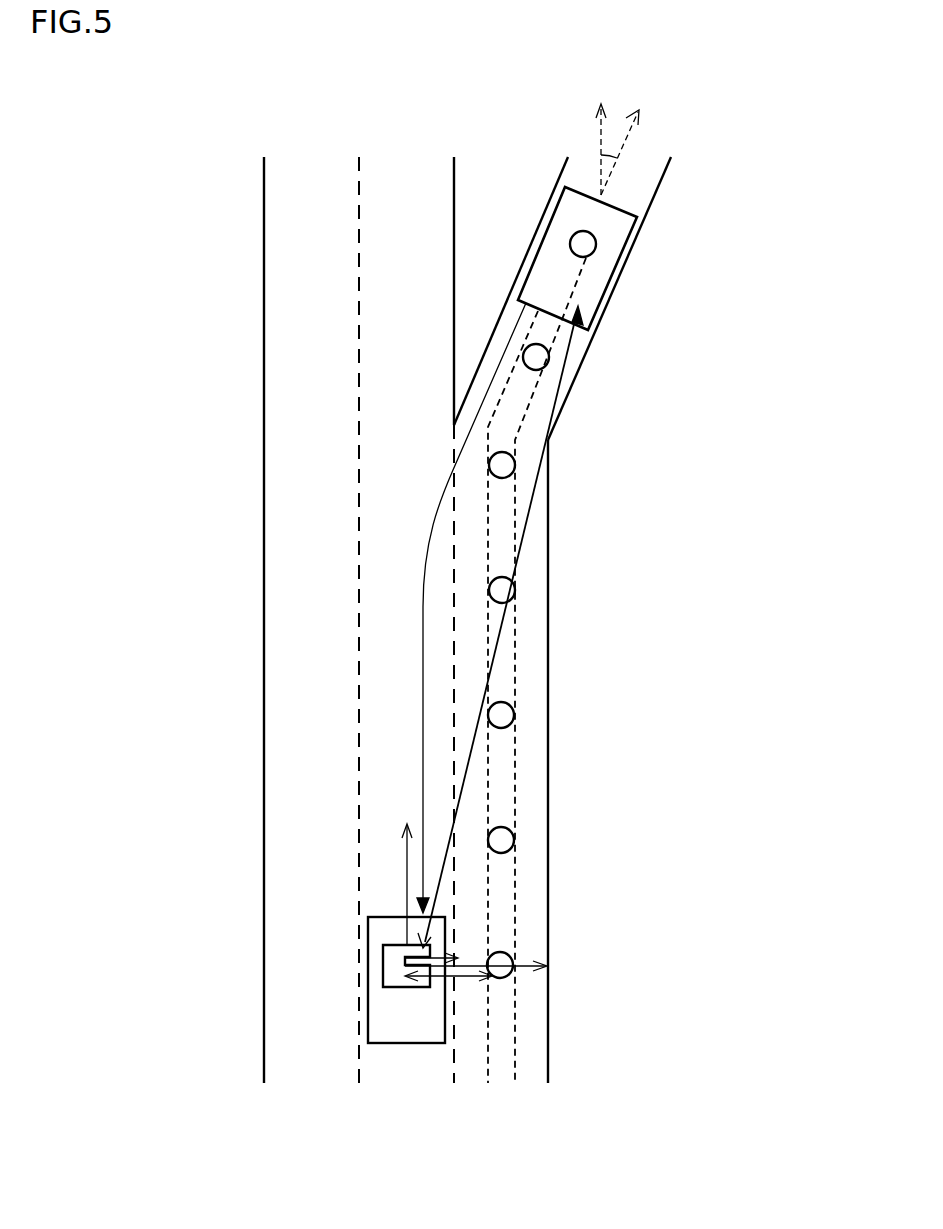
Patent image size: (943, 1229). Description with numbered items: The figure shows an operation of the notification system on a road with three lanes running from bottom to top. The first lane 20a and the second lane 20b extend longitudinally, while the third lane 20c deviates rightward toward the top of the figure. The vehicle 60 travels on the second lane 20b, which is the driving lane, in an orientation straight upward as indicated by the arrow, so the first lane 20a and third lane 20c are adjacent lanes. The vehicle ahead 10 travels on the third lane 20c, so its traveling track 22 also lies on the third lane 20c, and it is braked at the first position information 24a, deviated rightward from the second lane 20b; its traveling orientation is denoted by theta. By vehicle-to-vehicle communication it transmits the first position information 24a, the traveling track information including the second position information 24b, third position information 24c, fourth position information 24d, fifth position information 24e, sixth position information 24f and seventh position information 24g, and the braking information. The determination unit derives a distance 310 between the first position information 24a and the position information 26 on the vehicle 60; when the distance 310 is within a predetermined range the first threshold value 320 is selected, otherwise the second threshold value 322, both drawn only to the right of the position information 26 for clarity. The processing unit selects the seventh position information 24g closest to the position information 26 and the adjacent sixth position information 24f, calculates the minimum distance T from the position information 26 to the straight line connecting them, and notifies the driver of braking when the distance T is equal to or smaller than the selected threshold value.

The vehicle ahead 10 is at (617, 204).
The first lane 20a is at (308, 170).
The second lane 20b is at (403, 170).
The third lane 20c is at (644, 165).
The traveling track 22 is at (517, 508).
The first position information 24a is at (597, 246).
The second position information 24b is at (550, 352).
The third position information 24c is at (514, 459).
The fourth position information 24d is at (515, 585).
The fifth position information 24e is at (513, 704).
The sixth position information 24f is at (513, 826).
The seventh position information 24g is at (510, 955).
The position information 26 is at (383, 960).
The vehicle 60 is at (368, 1020).
The distance 310 is at (500, 647).
The first threshold value 320 is at (473, 981).
The second threshold value 322 is at (437, 961).
The distance T is at (463, 978).